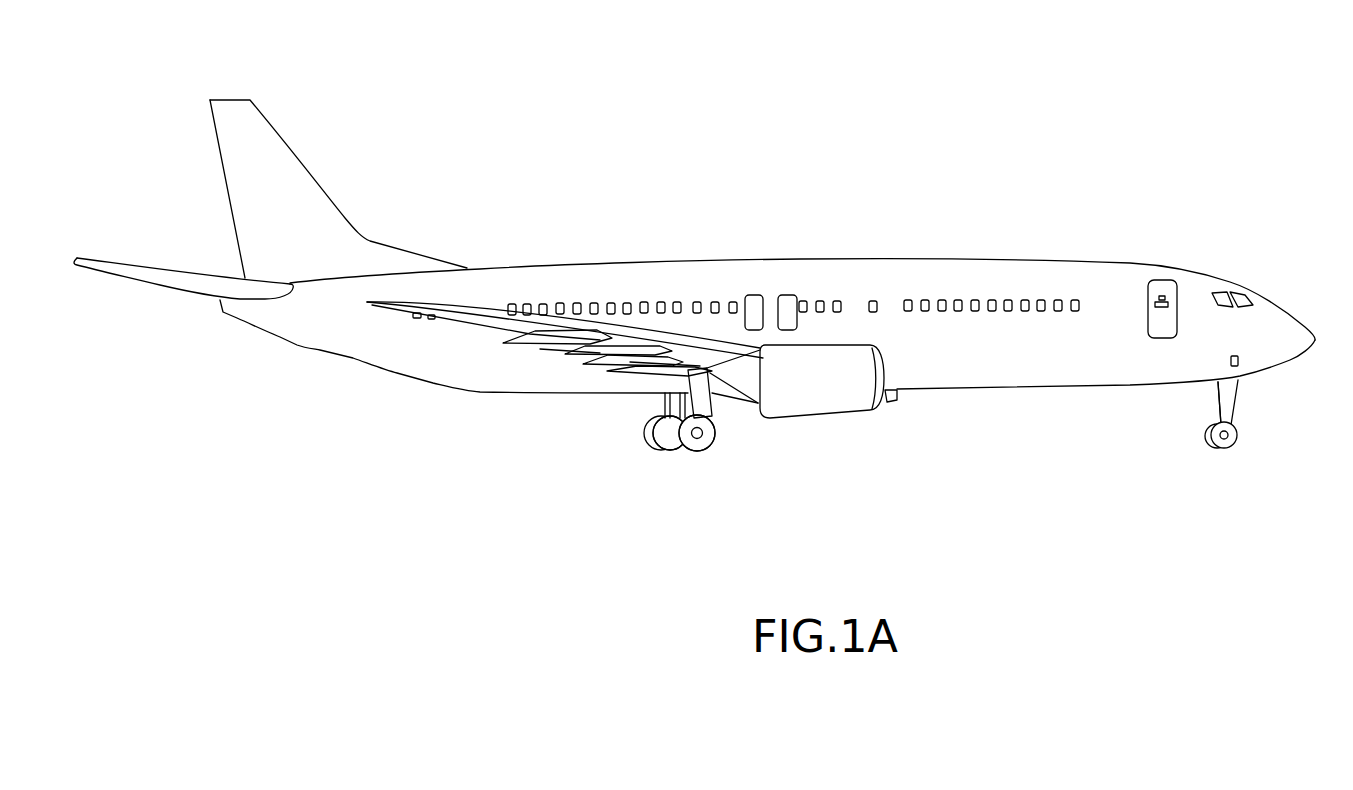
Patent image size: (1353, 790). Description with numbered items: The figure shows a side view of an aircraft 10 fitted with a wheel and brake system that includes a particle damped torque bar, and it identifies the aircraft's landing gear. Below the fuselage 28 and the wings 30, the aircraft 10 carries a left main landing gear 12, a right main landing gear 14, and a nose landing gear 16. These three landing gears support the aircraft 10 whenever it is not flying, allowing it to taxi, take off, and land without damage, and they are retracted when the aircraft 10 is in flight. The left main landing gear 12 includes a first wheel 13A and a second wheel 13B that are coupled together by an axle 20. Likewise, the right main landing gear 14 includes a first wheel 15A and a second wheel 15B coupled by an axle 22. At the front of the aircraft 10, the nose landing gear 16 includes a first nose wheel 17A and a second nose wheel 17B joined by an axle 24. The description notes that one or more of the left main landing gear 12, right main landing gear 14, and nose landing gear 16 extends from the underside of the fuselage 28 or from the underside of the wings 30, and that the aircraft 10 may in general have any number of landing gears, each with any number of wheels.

The aircraft 10 is at (877, 157).
The left main landing gear 12 is at (653, 414).
The first wheel 13A is at (648, 420).
The second wheel 13B is at (660, 448).
The right main landing gear 14 is at (722, 448).
The first wheel 15A is at (715, 431).
The second wheel 15B is at (672, 457).
The nose landing gear 16 is at (1257, 421).
The first nose wheel 17A is at (1208, 432).
The second nose wheel 17B is at (1235, 438).
The axle 20 is at (650, 437).
The axle 22 is at (702, 450).
The axle 24 is at (1232, 448).
The fuselage 28 is at (1210, 385).
The wings 30 is at (760, 365).